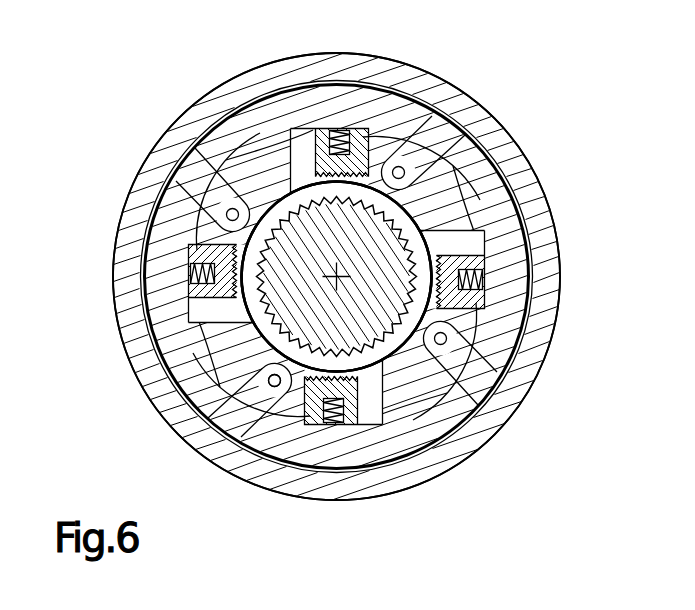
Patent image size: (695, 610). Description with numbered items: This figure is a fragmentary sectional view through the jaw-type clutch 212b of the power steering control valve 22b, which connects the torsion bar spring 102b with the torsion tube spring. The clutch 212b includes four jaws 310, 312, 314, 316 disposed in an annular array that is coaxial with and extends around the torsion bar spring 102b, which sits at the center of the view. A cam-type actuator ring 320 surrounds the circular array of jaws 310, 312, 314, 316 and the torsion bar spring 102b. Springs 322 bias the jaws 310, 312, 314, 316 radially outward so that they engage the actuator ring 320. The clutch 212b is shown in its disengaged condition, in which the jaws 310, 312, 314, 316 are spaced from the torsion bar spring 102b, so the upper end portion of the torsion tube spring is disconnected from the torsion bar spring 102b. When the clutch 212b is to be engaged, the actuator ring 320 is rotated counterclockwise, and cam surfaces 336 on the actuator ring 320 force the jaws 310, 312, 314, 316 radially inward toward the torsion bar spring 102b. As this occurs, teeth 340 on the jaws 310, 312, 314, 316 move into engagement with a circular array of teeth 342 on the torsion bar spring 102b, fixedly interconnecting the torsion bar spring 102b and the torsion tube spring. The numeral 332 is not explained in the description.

The power steering control valve 22b is at (648, 52).
The clutch 212b is at (384, 276).
The cam-type actuator ring 320 is at (188, 128).
The jaw 312 is at (505, 245).
The jaw 310 is at (398, 135).
The teeth 340 is at (308, 176).
The springs 322 is at (348, 128).
The cam surfaces 336 is at (368, 134).
The pivot pin 332 is at (218, 222).
The teeth 342 is at (266, 388).
The jaw 316 is at (190, 335).
The jaw 314 is at (385, 425).
The torsion bar spring 102b is at (428, 371).